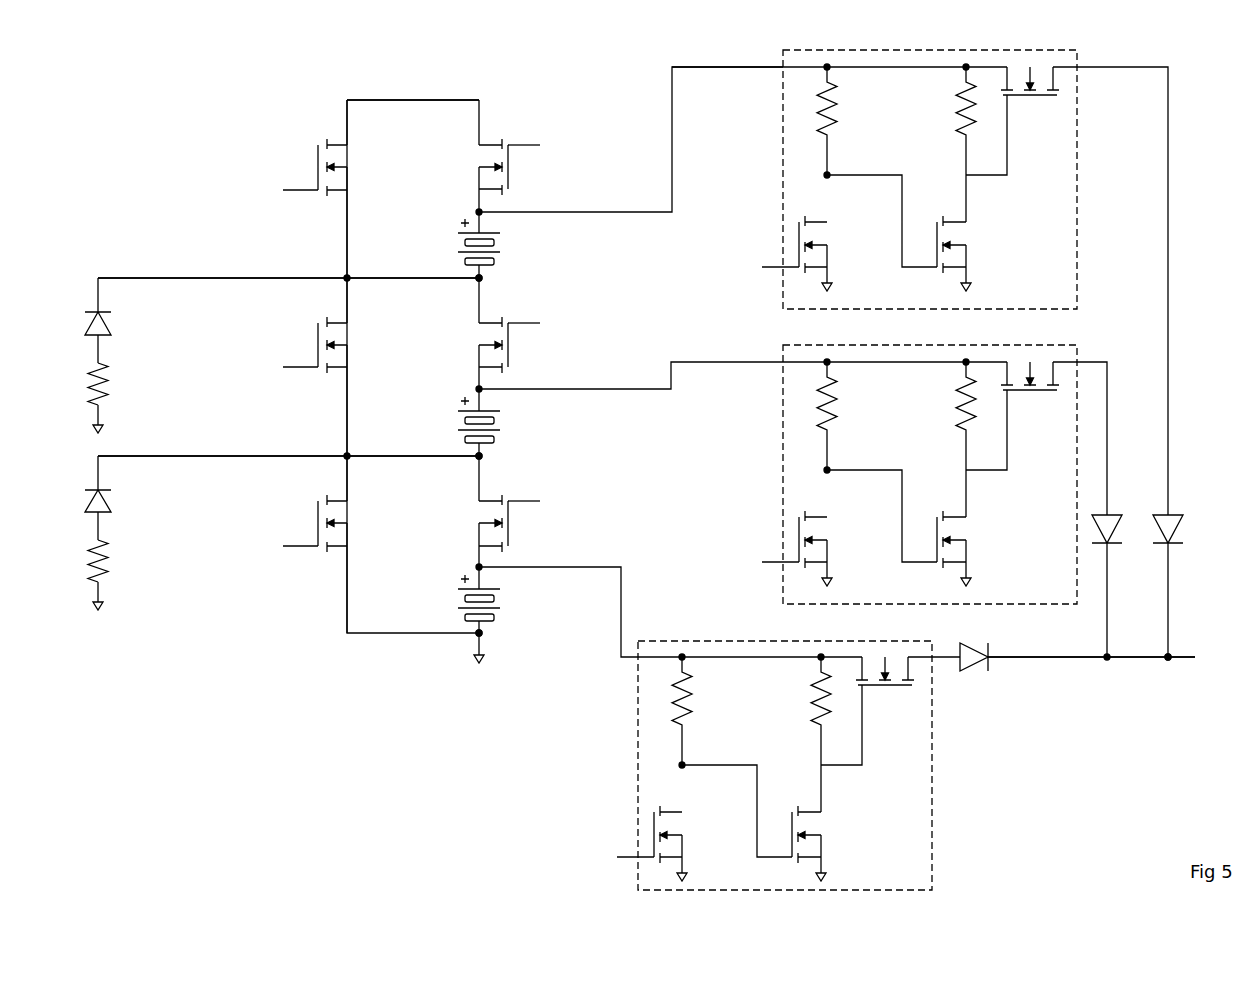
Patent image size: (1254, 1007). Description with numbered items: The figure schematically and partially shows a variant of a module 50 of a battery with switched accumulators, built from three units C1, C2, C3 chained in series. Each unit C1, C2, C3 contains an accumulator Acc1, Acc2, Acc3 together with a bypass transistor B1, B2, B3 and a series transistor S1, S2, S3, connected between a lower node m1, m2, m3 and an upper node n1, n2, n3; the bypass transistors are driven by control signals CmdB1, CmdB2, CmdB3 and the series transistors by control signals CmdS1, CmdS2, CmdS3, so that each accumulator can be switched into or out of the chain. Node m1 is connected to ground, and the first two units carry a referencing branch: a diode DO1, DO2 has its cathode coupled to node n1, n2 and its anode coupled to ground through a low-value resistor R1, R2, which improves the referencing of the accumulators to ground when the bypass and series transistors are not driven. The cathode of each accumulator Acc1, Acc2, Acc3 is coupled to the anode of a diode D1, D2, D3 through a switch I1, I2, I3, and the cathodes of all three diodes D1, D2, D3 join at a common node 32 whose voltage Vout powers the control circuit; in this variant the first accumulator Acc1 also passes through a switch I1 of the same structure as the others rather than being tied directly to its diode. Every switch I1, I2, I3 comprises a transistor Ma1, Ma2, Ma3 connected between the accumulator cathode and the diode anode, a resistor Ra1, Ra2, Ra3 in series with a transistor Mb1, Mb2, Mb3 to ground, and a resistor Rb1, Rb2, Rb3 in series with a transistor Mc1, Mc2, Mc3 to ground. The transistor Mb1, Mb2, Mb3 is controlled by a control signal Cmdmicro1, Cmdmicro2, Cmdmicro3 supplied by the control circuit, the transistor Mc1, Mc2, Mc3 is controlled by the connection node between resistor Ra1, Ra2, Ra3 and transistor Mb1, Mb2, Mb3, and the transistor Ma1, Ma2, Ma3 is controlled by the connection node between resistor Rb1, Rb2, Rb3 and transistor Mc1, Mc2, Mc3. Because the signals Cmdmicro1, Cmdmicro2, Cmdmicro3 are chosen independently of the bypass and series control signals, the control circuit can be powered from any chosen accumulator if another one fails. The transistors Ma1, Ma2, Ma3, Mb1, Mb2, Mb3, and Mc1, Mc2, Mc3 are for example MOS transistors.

The module 50 is at (689, 47).
The node 32 is at (1168, 661).
The transistor B1 is at (347, 523).
The transistor B2 is at (347, 345).
The transistor B3 is at (347, 167).
The transistor S1 is at (477, 523).
The transistor S2 is at (477, 345).
The transistor S3 is at (477, 167).
The accumulator Acc1 is at (502, 598).
The accumulator Acc2 is at (502, 421).
The accumulator Acc3 is at (502, 243).
The unit C1 is at (319, 593).
The unit C2 is at (317, 425).
The unit C3 is at (317, 243).
The node m1 is at (482, 458).
The node m2 is at (482, 280).
The node m3 is at (479, 100).
The node n1 is at (481, 636).
The node n2 is at (479, 456).
The node n3 is at (479, 278).
The control signal CmdB1 is at (262, 547).
The control signal CmdB2 is at (261, 369).
The control signal CmdB3 is at (261, 191).
The control signal CmdS1 is at (558, 503).
The control signal CmdS2 is at (558, 326).
The control signal CmdS3 is at (558, 147).
The diode DO1 is at (118, 498).
The diode DO2 is at (118, 320).
The resistor R1 is at (112, 575).
The resistor R2 is at (112, 398).
The switch I1 is at (933, 741).
The switch I2 is at (1060, 343).
The switch I3 is at (1078, 102).
The resistor Ra1 is at (700, 711).
The resistor Ra2 is at (845, 416).
The resistor Ra3 is at (845, 121).
The resistor Rb1 is at (795, 733).
The resistor Rb2 is at (941, 438).
The resistor Rb3 is at (941, 143).
The transistor Ma1 is at (867, 711).
The transistor Ma2 is at (1012, 416).
The transistor Ma3 is at (1012, 121).
The transistor Mb1 is at (691, 843).
The transistor Mb2 is at (836, 548).
The transistor Mb3 is at (836, 253).
The transistor Mc1 is at (773, 823).
The transistor Mc2 is at (918, 528).
The transistor Mc3 is at (918, 233).
The control signal Cmdmicro1 is at (578, 858).
The control signal Cmdmicro2 is at (723, 563).
The control signal Cmdmicro3 is at (723, 268).
The diode D1 is at (974, 644).
The diode D2 is at (1114, 574).
The diode D3 is at (1175, 574).
The voltage Vout is at (1114, 656).